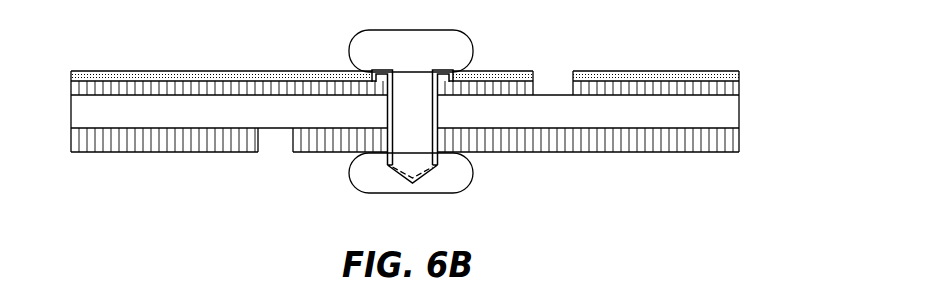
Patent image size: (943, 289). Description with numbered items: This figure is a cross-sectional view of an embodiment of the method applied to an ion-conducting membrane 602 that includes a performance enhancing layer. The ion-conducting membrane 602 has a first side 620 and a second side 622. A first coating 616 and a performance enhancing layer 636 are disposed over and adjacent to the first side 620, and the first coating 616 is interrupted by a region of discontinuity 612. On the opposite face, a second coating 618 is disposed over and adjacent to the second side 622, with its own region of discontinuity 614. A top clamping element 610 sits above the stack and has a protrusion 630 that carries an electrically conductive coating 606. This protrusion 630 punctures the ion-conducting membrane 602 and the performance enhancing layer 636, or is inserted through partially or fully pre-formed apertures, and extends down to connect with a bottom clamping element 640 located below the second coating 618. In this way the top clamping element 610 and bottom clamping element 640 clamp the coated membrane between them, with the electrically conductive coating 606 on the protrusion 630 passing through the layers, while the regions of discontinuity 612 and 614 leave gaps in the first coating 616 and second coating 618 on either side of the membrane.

The ion-conducting membrane 602 is at (84, 115).
The electrically conductive coating 606 is at (388, 109).
The top clamping element 610 is at (430, 35).
The region of discontinuity 612 is at (547, 80).
The region of discontinuity 614 is at (277, 143).
The first coating 616 is at (84, 89).
The second coating 618 is at (104, 147).
The first side 620 is at (713, 90).
The second side 622 is at (713, 130).
The protrusion 630 is at (420, 113).
The performance enhancing layer 636 is at (104, 76).
The bottom clamping element 640 is at (473, 170).